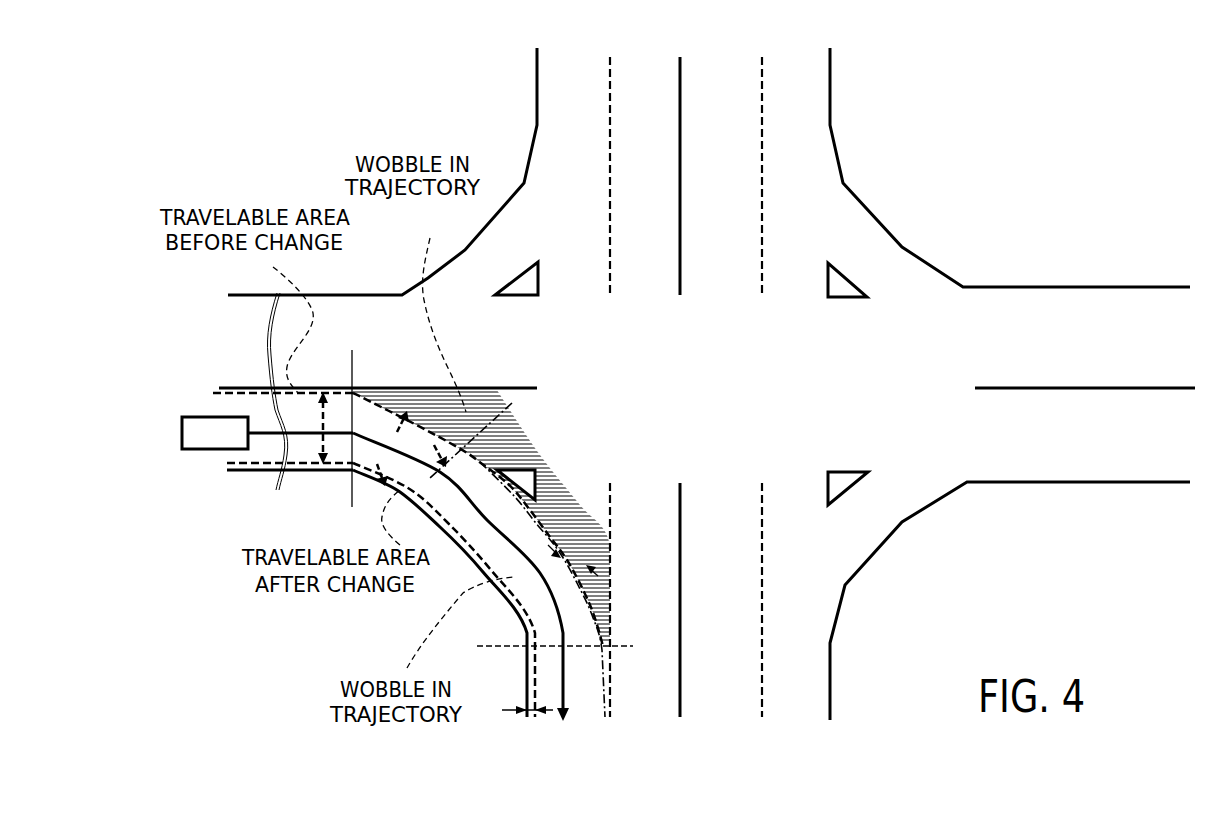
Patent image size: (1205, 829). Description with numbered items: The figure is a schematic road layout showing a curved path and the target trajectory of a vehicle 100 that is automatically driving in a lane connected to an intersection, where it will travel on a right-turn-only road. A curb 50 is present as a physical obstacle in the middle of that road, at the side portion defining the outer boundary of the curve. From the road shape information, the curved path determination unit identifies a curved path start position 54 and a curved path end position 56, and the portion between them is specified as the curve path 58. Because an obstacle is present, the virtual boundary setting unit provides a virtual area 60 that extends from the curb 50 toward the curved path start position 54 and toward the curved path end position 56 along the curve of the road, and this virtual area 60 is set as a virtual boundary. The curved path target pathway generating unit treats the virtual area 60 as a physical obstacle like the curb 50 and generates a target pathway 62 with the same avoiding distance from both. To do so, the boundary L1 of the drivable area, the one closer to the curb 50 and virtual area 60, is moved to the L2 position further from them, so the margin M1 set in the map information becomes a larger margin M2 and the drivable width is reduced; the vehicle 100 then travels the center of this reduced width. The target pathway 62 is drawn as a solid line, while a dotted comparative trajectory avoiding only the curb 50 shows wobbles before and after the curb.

The vehicle 100 is at (210, 449).
The curb 50 is at (536, 470).
The curved path start position 54 is at (354, 419).
The curved path end position 56 is at (568, 645).
The curve path 58 is at (601, 431).
The virtual area 60 is at (470, 412).
The target pathway 62 is at (533, 545).
The boundary L1 is at (480, 462).
The L2 position L2 is at (471, 434).
The margin M1 is at (532, 721).
The margin M2 is at (612, 581).